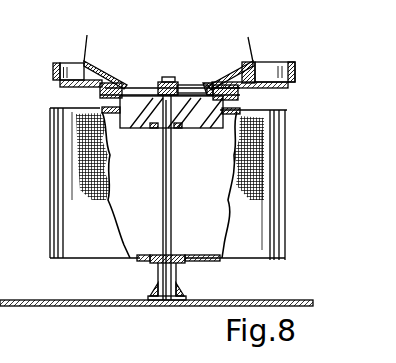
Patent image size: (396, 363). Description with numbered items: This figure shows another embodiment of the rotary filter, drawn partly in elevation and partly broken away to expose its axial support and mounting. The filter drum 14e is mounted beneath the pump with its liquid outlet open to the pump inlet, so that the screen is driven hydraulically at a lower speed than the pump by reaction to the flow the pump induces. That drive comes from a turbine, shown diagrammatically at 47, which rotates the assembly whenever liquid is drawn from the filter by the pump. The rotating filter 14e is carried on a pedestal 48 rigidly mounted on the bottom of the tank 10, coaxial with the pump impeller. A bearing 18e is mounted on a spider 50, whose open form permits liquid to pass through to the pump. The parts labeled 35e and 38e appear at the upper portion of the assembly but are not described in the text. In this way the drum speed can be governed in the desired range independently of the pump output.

The tank 10 is at (296, 300).
The filter drum 14e is at (318, 190).
The bearing 18e is at (182, 85).
The right arm 35e is at (261, 44).
The left arm 38e is at (128, 88).
The turbine 47 is at (137, 138).
The pedestal 48 is at (172, 196).
The spider 50 is at (207, 84).